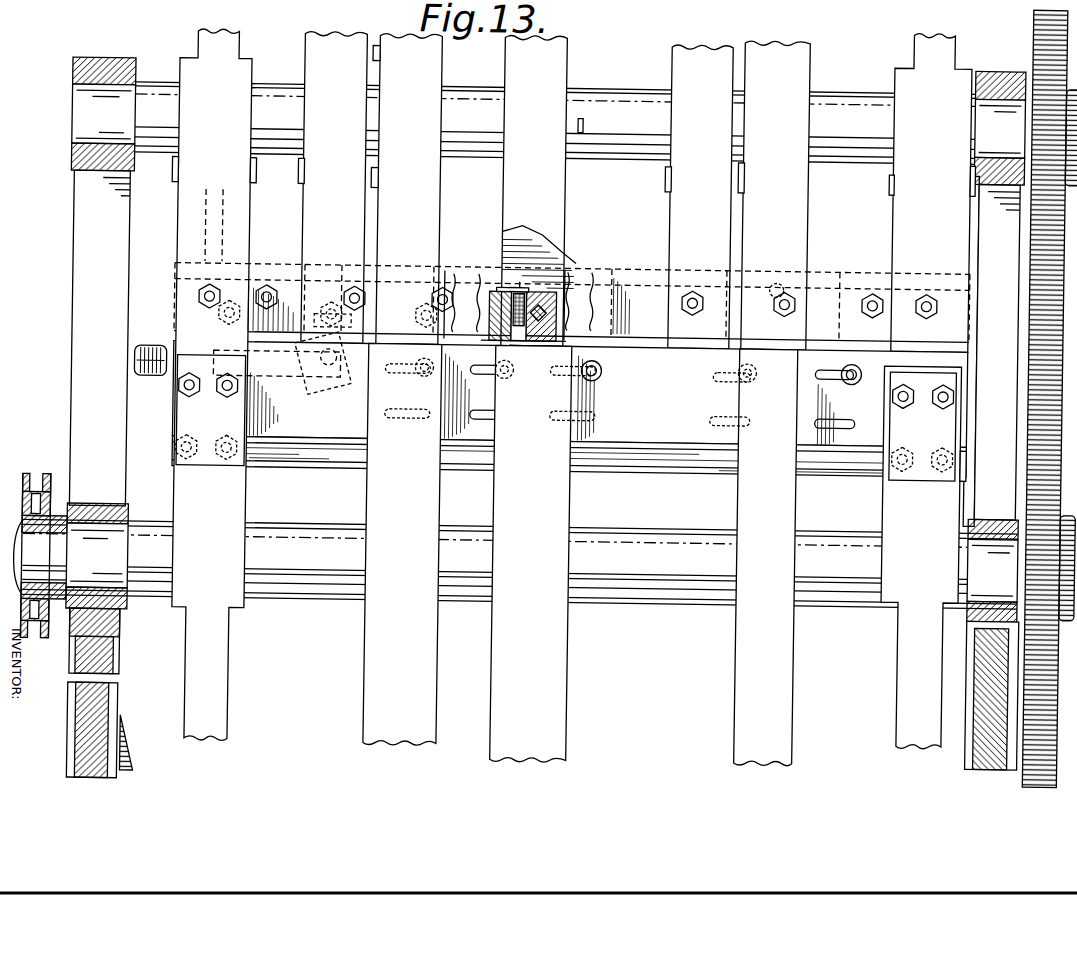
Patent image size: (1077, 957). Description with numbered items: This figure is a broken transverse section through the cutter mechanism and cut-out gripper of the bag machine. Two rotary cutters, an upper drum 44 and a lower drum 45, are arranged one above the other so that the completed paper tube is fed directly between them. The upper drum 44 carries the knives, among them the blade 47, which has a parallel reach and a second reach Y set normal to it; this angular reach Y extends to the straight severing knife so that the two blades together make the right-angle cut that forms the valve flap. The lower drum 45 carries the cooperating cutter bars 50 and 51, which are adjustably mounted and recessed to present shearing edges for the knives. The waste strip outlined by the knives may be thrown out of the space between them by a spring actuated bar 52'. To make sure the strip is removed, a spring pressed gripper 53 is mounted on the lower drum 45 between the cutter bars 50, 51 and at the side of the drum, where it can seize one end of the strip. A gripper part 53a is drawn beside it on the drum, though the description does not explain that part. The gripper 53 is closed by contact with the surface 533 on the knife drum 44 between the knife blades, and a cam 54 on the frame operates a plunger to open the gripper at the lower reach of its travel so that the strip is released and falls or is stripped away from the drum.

The upper drum 44 is at (593, 192).
The lower drum 45 is at (580, 554).
The blade 47 is at (583, 340).
The cutter bar 50 is at (569, 394).
The cutter bar 51 is at (672, 463).
The spring actuated bar 52' is at (523, 326).
The spring pressed gripper 53 is at (344, 382).
The knurled knob 53a is at (166, 350).
The surface on knife drum 533 is at (318, 272).
The cam 54 is at (137, 760).
The second reach of blade Y is at (762, 325).